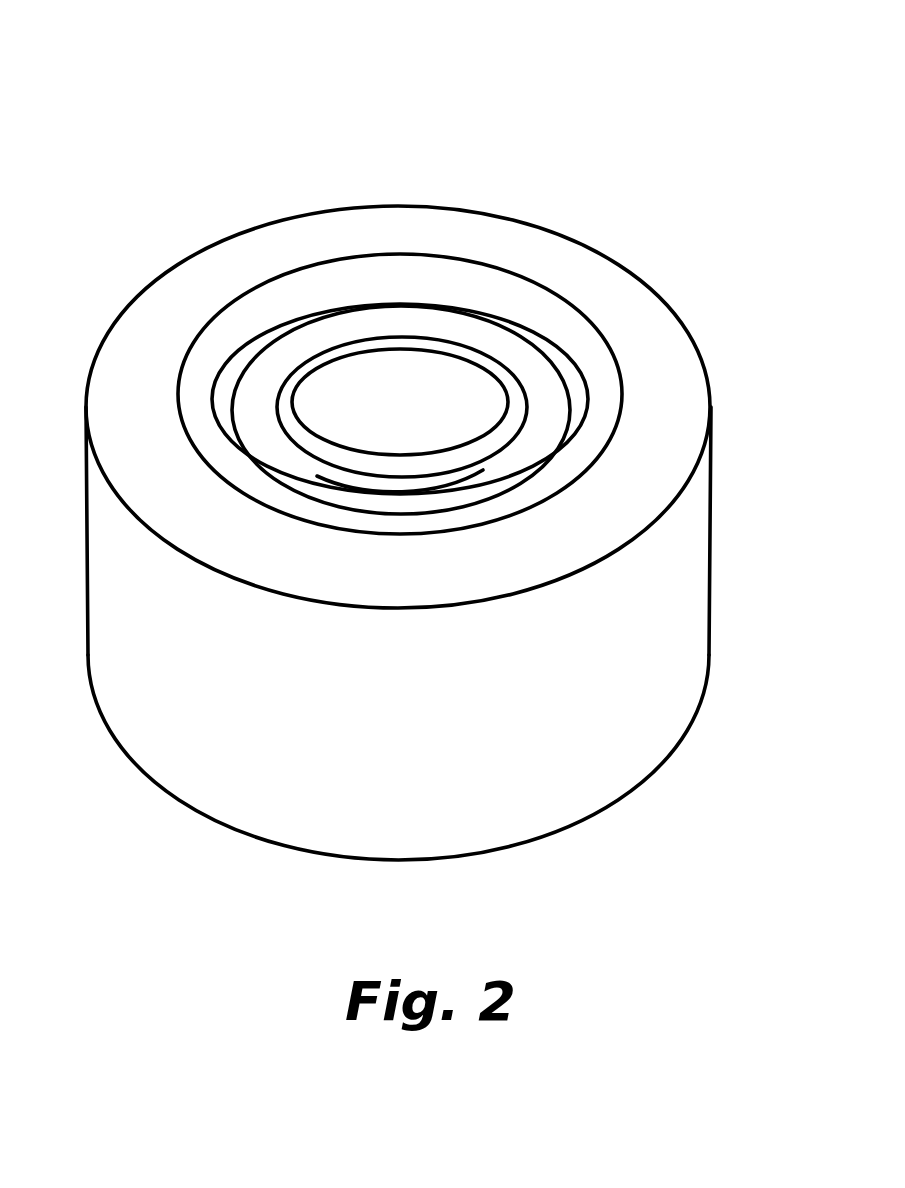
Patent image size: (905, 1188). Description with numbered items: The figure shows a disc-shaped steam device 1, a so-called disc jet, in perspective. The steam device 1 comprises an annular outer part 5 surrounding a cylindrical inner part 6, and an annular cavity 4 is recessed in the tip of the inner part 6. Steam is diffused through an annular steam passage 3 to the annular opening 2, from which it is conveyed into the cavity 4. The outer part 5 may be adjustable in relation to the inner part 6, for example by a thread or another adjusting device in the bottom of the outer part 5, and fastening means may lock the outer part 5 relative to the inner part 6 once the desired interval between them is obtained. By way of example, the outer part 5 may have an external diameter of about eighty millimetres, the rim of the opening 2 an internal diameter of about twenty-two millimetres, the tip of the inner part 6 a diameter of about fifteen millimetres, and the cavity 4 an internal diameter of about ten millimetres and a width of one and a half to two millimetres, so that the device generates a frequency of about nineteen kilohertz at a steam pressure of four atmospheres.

The steam device 1 is at (712, 552).
The annular opening 2 is at (252, 355).
The annular steam passage 3 is at (223, 413).
The annular cavity 4 is at (495, 462).
The annular outer part 5 is at (412, 228).
The cylindrical inner part 6 is at (387, 370).